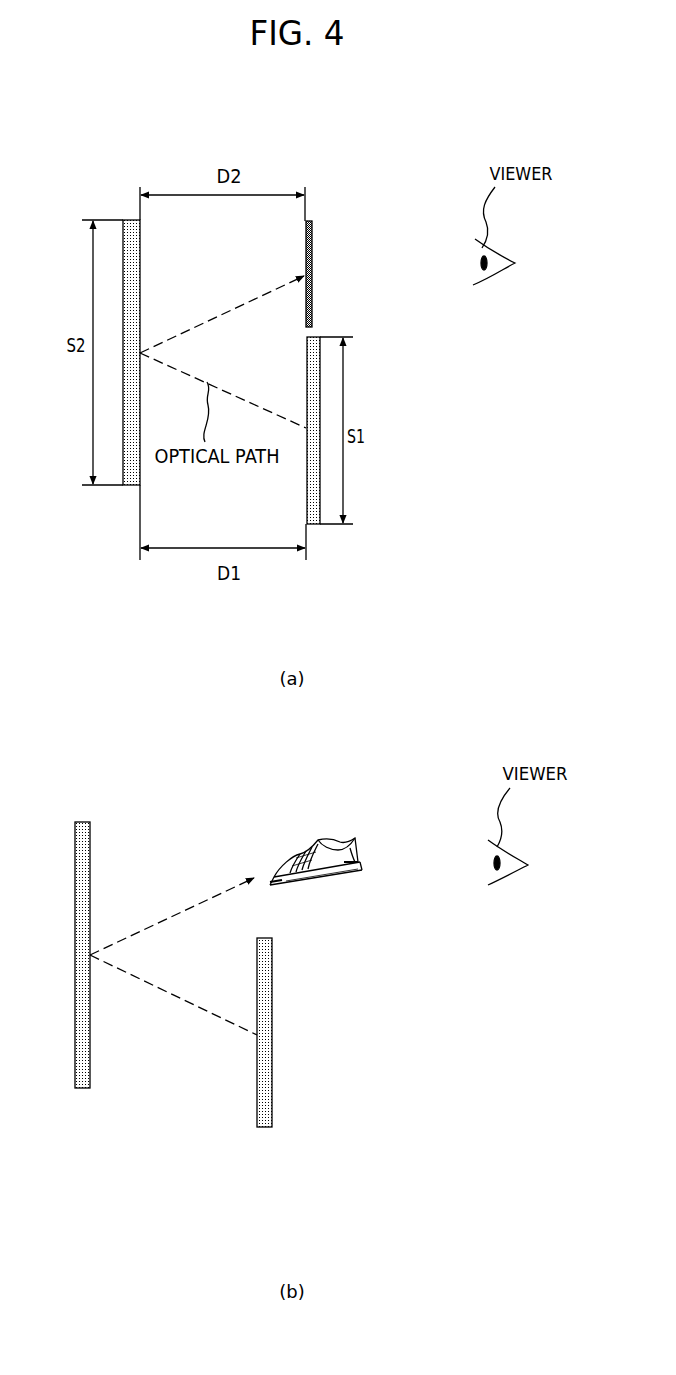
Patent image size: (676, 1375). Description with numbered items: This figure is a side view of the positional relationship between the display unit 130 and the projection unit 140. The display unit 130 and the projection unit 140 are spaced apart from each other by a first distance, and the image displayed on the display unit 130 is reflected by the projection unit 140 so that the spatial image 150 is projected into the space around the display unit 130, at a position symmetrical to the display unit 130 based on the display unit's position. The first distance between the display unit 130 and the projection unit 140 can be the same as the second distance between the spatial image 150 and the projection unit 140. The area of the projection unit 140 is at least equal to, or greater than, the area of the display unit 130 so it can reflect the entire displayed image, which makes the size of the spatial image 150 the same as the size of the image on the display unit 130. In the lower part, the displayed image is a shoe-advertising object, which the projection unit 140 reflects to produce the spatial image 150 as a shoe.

The projection unit 140 is at (130, 218).
The spatial image 150 is at (308, 220).
The display unit 130 is at (313, 525).